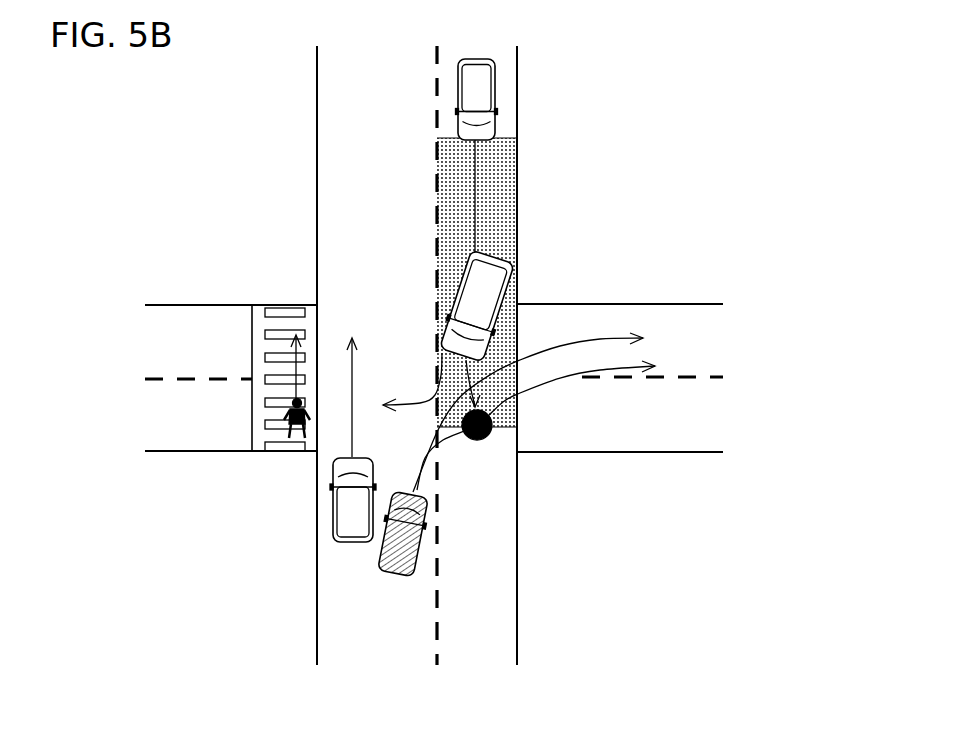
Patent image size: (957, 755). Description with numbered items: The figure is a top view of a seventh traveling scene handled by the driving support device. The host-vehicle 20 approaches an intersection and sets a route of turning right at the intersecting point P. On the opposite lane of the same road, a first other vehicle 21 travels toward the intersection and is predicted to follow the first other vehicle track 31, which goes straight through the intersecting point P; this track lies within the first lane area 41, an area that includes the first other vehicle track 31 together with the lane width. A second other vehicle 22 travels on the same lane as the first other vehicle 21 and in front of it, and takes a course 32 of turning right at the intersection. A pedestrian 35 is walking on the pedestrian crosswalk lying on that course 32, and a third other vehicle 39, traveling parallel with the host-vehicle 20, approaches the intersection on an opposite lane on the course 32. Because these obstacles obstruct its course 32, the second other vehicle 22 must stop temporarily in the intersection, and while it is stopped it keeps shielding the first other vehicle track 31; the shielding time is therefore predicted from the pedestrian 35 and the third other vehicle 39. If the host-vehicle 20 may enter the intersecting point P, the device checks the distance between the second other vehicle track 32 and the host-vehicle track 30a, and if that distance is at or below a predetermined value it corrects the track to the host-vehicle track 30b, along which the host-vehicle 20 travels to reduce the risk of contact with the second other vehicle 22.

The host-vehicle 20 is at (403, 577).
The first other vehicle 21 is at (495, 88).
The second other vehicle 22 is at (433, 293).
The host-vehicle track 30a is at (618, 337).
The corrected host-vehicle track 30b is at (577, 383).
The first other vehicle track 31 is at (478, 155).
The second other vehicle track 32 is at (405, 400).
The pedestrian 35 is at (288, 428).
The third other vehicle 39 is at (333, 528).
The first lane area 41 is at (500, 192).
The intersecting point P is at (488, 437).